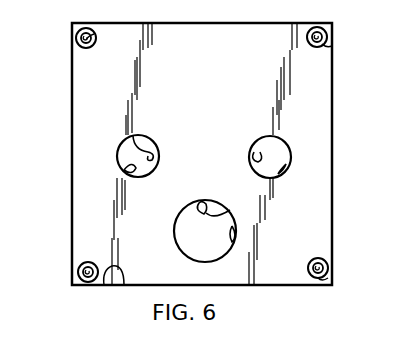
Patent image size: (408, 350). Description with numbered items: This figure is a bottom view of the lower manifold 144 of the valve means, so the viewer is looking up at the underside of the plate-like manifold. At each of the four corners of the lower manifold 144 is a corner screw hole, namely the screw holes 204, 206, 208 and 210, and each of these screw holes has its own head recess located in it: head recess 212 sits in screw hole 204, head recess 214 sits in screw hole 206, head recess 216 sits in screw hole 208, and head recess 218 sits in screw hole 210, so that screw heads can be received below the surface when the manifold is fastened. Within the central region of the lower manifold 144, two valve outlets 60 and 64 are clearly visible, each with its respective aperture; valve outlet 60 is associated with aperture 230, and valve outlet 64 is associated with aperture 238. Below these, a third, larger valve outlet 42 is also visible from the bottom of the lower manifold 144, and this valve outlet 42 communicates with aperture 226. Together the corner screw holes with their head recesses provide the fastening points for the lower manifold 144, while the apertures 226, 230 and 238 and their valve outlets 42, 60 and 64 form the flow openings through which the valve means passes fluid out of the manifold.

The lower manifold 144 is at (88, 98).
The corner screw hole 206 is at (82, 32).
The head recess 214 is at (96, 36).
The head recess 212 is at (321, 33).
The corner screw hole 204 is at (327, 47).
The corner screw hole 210 is at (82, 264).
The head recess 218 is at (122, 284).
The head recess 216 is at (327, 270).
The corner screw hole 208 is at (322, 280).
The aperture 238 is at (136, 135).
The valve outlet 64 is at (126, 170).
The aperture 230 is at (264, 160).
The valve outlet 60 is at (280, 174).
The valve outlet 42 is at (232, 238).
The aperture 226 is at (232, 210).